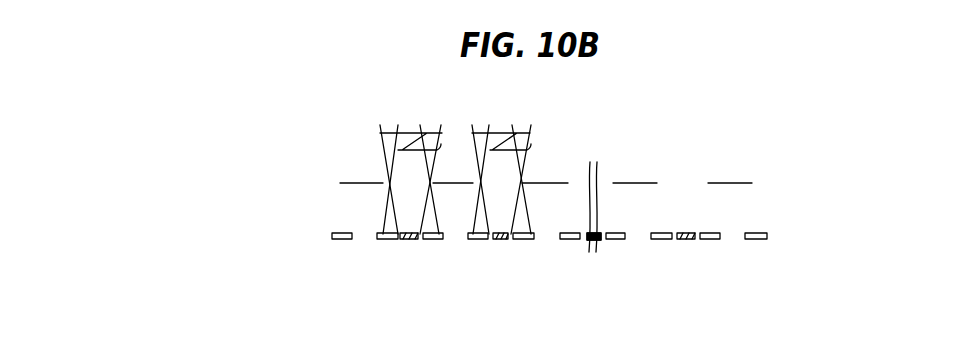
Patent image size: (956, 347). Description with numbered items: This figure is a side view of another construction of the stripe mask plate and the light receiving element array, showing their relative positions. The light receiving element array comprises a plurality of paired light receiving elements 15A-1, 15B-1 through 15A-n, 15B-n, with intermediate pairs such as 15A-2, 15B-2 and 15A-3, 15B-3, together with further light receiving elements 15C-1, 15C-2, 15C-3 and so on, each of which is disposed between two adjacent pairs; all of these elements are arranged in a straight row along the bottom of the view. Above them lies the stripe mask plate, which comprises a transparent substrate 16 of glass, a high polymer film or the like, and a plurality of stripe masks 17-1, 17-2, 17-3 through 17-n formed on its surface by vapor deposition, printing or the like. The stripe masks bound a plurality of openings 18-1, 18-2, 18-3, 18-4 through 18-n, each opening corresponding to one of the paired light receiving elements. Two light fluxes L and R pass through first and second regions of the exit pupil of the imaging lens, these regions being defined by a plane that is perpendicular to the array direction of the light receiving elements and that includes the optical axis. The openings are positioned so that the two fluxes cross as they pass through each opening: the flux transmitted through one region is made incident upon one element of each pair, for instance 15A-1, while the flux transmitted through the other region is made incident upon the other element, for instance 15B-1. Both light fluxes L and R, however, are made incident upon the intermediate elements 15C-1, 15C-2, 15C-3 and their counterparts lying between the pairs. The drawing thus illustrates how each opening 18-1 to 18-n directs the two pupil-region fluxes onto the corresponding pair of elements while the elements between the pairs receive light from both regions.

The light receiving element 15A-1 is at (340, 239).
The light receiving element 15A-2 is at (432, 239).
The light receiving element 15A-3 is at (527, 239).
The light receiving element 15A-n is at (710, 239).
The light receiving element 15B-1 is at (378, 239).
The light receiving element 15B-2 is at (477, 239).
The light receiving element 15B-3 is at (572, 239).
The light receiving element 15B-n is at (755, 239).
The light receiving element 15C-1 is at (409, 233).
The light receiving element 15C-2 is at (503, 240).
The light receiving element 15C-3 is at (588, 233).
The transparent substrate 16 is at (753, 207).
The stripe mask 17-1 is at (366, 183).
The stripe mask 17-2 is at (455, 183).
The stripe mask 17-3 is at (548, 183).
The stripe mask 17-n is at (733, 183).
The opening 18-1 is at (323, 188).
The opening 18-2 is at (413, 186).
The opening 18-3 is at (582, 184).
The opening 18-4 is at (603, 186).
The opening 18-n is at (773, 187).
The light flux L is at (455, 169).
The light flux R is at (457, 169).